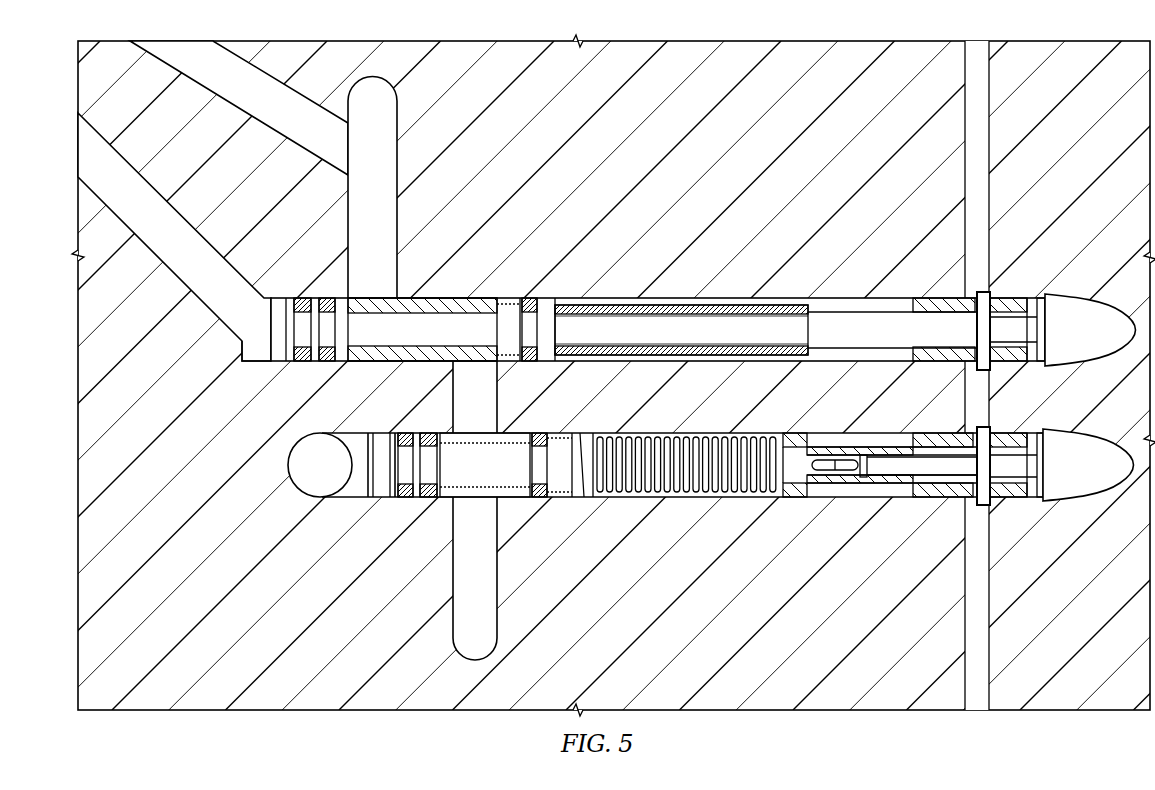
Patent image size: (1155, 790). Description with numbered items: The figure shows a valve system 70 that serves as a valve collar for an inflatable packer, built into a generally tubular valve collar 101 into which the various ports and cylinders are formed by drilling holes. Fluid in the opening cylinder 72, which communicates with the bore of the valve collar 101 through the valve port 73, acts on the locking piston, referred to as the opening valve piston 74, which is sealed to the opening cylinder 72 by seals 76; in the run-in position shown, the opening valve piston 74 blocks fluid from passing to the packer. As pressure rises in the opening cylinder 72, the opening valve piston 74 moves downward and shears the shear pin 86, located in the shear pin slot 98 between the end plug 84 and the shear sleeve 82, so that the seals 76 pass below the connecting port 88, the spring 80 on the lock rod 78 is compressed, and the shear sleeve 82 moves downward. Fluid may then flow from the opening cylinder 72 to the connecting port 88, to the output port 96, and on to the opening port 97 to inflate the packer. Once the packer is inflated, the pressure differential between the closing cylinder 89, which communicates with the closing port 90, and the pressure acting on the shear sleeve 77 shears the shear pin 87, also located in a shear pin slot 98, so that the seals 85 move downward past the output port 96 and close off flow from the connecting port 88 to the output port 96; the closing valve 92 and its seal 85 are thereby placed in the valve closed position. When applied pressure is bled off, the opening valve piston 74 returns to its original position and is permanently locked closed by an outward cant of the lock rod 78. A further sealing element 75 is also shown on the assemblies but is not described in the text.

The valve system 70 is at (615, 168).
The opening cylinder 72 is at (355, 487).
The valve port 73 is at (307, 467).
The opening valve piston 74 is at (472, 475).
The seal 75 is at (532, 363).
The seals 76 is at (403, 497).
The shear sleeve 77 is at (727, 305).
The lock rod 78 is at (583, 497).
The spring 80 is at (657, 497).
The shear sleeve 82 is at (945, 500).
The end plug 84 is at (922, 297).
The seals 85 is at (305, 298).
The shear pin 86 is at (993, 508).
The shear pin 87 is at (990, 290).
The connecting port 88 is at (460, 403).
The closing cylinder 89 is at (252, 352).
The closing port 90 is at (182, 263).
The closing valve 92 is at (433, 325).
The output port 96 is at (368, 240).
The opening port 97 is at (245, 142).
The shear pin slot 98 is at (1003, 367).
The valve collar 101 is at (823, 554).